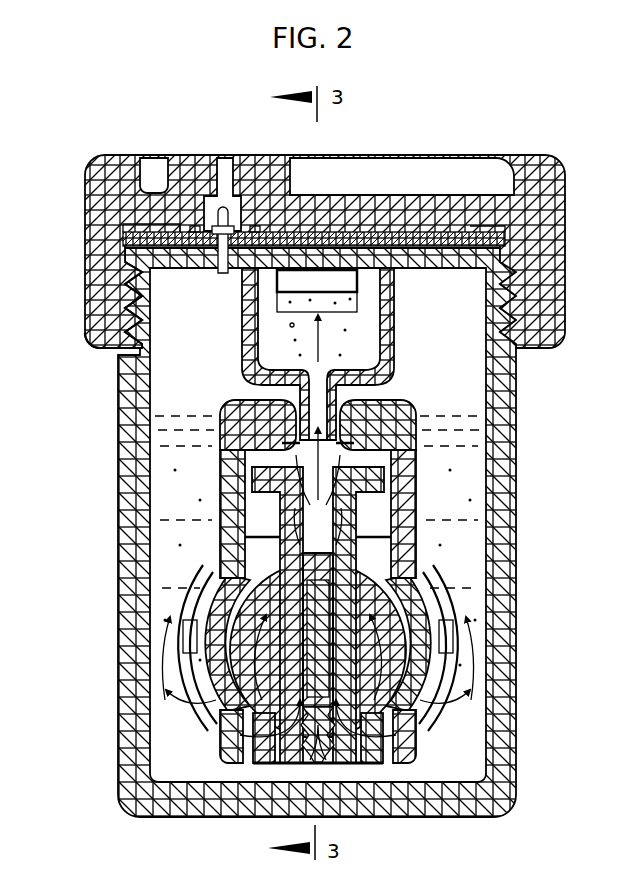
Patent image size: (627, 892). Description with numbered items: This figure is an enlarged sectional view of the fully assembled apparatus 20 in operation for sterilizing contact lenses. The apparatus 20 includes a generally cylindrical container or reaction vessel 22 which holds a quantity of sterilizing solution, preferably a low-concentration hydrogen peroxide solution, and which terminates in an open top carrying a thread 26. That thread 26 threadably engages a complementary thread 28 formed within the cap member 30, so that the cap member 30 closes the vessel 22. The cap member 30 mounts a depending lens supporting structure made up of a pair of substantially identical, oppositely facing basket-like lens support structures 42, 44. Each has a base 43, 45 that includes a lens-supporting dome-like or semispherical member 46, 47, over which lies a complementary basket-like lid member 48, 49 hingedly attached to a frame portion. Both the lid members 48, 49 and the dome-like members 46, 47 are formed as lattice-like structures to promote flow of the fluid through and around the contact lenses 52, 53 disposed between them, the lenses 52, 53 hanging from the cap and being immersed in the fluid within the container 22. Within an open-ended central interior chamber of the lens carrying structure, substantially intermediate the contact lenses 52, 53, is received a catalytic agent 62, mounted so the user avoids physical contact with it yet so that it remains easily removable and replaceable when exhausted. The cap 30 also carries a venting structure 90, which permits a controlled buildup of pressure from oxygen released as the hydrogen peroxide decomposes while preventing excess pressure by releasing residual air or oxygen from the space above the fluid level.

The apparatus 20 is at (110, 757).
The container or reaction vessel 22 is at (512, 800).
The thread 26 is at (112, 298).
The complementary thread 28 is at (84, 336).
The cap member 30 is at (95, 250).
The lens support structure 42 is at (462, 569).
The base 43 is at (352, 388).
The lens support structure 44 is at (190, 571).
The base 45 is at (285, 388).
The lens-supporting dome-like member 46 is at (408, 714).
The lens-supporting dome-like member 47 is at (237, 683).
The basket-like lid member 48 is at (400, 478).
The basket-like lid member 49 is at (232, 468).
The contact lens 52 is at (432, 620).
The contact lens 53 is at (204, 657).
The catalytic agent 62 is at (342, 765).
The venting structure 90 is at (228, 205).